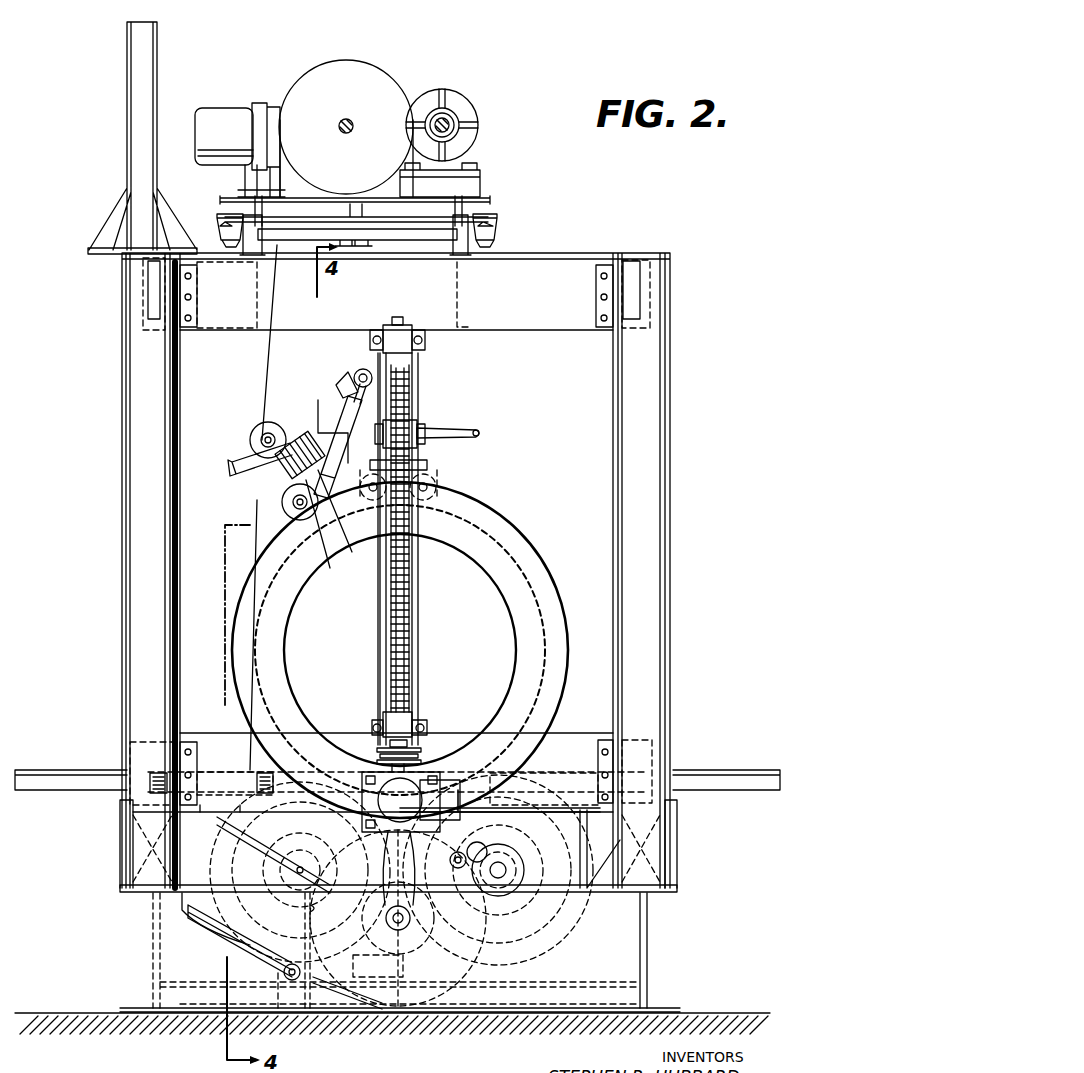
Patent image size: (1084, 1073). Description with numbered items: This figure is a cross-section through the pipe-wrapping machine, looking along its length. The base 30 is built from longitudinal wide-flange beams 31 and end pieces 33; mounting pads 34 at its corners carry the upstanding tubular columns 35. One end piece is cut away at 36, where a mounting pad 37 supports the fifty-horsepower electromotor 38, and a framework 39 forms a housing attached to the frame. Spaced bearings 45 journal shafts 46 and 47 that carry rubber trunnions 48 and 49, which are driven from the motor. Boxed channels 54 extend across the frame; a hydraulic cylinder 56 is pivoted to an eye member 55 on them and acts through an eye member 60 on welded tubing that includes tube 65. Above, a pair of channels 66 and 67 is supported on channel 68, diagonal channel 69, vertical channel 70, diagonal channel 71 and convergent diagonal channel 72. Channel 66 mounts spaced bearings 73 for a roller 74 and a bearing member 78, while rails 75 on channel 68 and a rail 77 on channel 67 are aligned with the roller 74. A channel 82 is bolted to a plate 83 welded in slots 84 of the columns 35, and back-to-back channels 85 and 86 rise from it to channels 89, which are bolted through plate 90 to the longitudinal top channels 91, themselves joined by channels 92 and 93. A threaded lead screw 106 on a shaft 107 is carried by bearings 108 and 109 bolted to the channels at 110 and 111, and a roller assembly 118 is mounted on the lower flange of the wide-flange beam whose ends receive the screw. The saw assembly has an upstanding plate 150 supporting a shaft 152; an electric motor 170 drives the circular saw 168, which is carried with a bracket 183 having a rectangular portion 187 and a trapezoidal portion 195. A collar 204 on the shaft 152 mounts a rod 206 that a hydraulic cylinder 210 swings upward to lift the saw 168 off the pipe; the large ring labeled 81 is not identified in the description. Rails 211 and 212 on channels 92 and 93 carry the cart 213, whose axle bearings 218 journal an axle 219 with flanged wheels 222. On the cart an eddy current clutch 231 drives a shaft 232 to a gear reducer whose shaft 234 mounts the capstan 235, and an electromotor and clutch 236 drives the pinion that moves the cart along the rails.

The base 30 is at (653, 952).
The longitudinal wide-flange beams 31 is at (672, 1010).
The end pieces 33 is at (655, 924).
The mounting pads 34 is at (140, 890).
The tubular columns 35 is at (650, 498).
The cut-away portion 36 is at (308, 903).
The mounting pad 37 is at (478, 962).
The electromotor 38 is at (470, 937).
The framework 39 is at (190, 925).
The spaced bearings 45 is at (258, 895).
The shaft 46 is at (540, 890).
The shaft 47 is at (303, 860).
The rubber trunnion 48 is at (580, 926).
The rubber trunnion 49 is at (240, 944).
The boxed channels 54 is at (170, 982).
The eye member 55 is at (280, 975).
The hydraulic cylinder 56 is at (345, 1004).
The eye member 60 is at (482, 888).
The tube 65 is at (316, 720).
The channel 66 is at (215, 812).
The channel 67 is at (600, 849).
The channel 68 is at (125, 832).
The diagonal channel 69 is at (212, 872).
The vertical channel 70 is at (210, 855).
The diagonal channel 71 is at (285, 838).
The convergent diagonal channel 72 is at (470, 840).
The spaced bearings 73 is at (158, 765).
The roller 74 is at (208, 772).
The rails 75 is at (38, 775).
The rail 77 is at (757, 775).
The bearing member 78 is at (363, 775).
The turntable 81 is at (530, 548).
The channel 82 is at (205, 733).
The plate 83 is at (135, 740).
The slots 84 is at (130, 745).
The channel 85 is at (383, 630).
The channel 86 is at (418, 605).
The channels 89 is at (585, 262).
The plate 90 is at (598, 300).
The channels 91 is at (148, 340).
The channel 92 is at (253, 300).
The channel 93 is at (470, 306).
The threaded lead screw 106 is at (410, 627).
The shaft 107 is at (402, 366).
The bearing 108 is at (398, 358).
The bearing 109 is at (408, 722).
The bolted attachment 110 is at (405, 340).
The bolted attachment 111 is at (428, 724).
The roller assembly 118 is at (438, 480).
The upstanding plate 150 is at (370, 368).
The shaft 152 is at (350, 382).
The circular saw 168 is at (280, 503).
The electric motor 170 is at (268, 440).
The bracket 183 is at (247, 462).
The rectangular portion 187 is at (316, 530).
The trapezoidal portion 195 is at (338, 520).
The collar 204 is at (355, 378).
The rod 206 is at (357, 405).
The hydraulic cylinder 210 is at (455, 432).
The rail 211 is at (240, 252).
The rail 212 is at (470, 250).
The cart 213 is at (496, 198).
The axle bearings 218 is at (222, 232).
The axle 219 is at (430, 243).
The flanged wheels 222 is at (268, 248).
The eddy current clutch 231 is at (462, 102).
The shaft 232 is at (458, 122).
The shaft 234 is at (346, 118).
The capstan 235 is at (345, 60).
The electromotor and clutch 236 is at (228, 120).